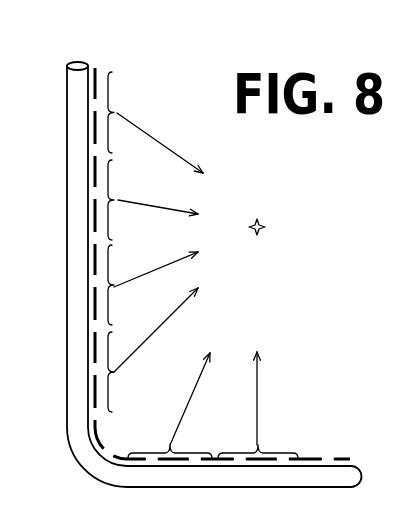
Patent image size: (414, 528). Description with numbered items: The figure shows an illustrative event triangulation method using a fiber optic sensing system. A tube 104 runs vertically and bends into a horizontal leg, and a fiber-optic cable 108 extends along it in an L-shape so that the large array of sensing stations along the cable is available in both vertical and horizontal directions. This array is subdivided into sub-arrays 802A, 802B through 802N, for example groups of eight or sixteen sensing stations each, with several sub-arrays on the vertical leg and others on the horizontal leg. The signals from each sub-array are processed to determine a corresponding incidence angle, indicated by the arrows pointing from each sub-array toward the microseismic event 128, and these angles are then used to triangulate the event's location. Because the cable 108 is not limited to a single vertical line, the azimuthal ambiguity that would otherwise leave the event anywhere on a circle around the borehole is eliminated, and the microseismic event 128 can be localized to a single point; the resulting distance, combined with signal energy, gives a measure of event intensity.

The tube 104 is at (66, 87).
The fiber-optic cable 108 is at (94, 65).
The sub-array 802A is at (155, 122).
The sub-array 802B is at (153, 200).
The sub-array 802N is at (272, 405).
The microseismic event 128 is at (262, 222).